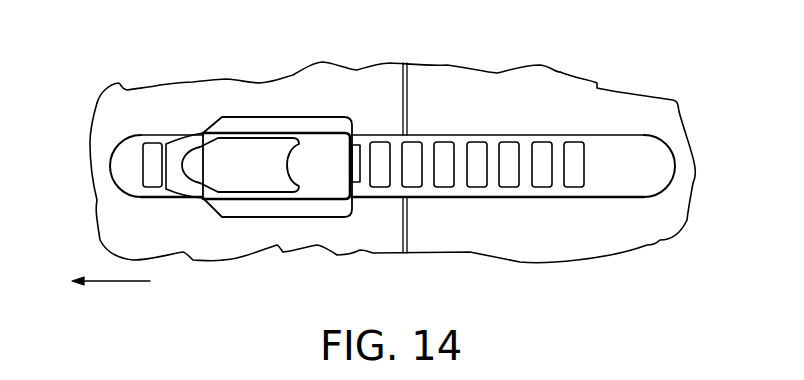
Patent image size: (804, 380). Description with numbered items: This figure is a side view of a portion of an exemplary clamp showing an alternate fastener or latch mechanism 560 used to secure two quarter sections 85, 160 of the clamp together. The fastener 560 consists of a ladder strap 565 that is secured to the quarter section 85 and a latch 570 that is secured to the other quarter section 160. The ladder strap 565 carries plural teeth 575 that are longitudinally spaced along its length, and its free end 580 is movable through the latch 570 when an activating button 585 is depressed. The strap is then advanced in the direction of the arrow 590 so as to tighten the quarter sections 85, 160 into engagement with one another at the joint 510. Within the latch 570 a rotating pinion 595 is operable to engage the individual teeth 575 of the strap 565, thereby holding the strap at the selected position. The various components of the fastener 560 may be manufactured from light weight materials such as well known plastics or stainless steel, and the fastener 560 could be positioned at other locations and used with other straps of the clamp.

The quarter section 85 is at (626, 118).
The quarter section 160 is at (178, 98).
The joint 510 is at (407, 103).
The fastener or latch mechanism 560 is at (348, 230).
The ladder strap 565 is at (650, 165).
The latch 570 is at (293, 127).
The teeth 575 is at (505, 160).
The free end 580 is at (125, 163).
The activating button 585 is at (237, 158).
The arrow 590 is at (118, 282).
The rotating pinion 595 is at (363, 145).